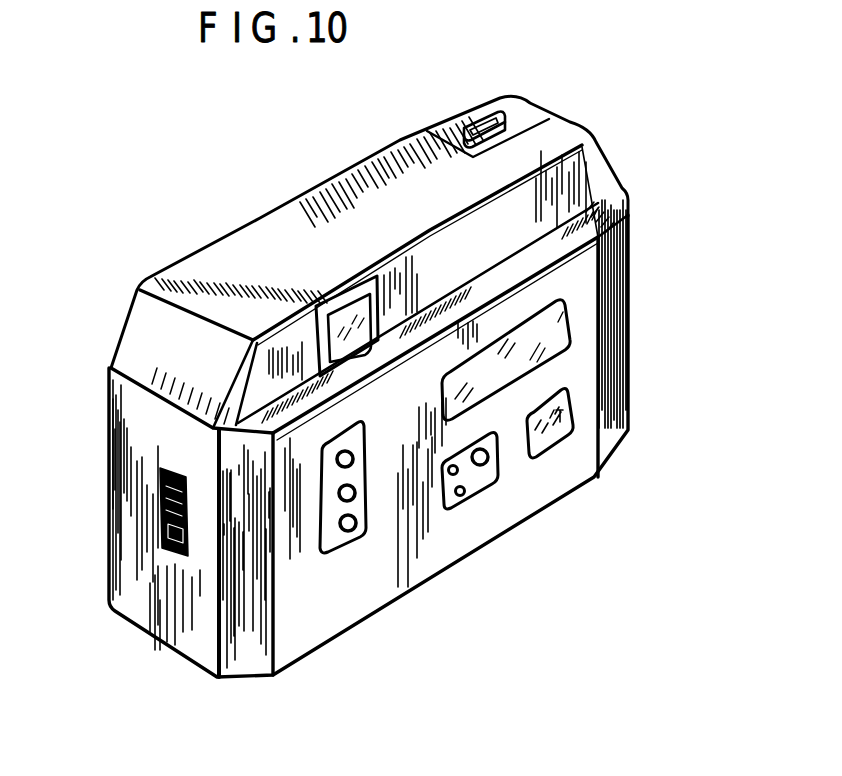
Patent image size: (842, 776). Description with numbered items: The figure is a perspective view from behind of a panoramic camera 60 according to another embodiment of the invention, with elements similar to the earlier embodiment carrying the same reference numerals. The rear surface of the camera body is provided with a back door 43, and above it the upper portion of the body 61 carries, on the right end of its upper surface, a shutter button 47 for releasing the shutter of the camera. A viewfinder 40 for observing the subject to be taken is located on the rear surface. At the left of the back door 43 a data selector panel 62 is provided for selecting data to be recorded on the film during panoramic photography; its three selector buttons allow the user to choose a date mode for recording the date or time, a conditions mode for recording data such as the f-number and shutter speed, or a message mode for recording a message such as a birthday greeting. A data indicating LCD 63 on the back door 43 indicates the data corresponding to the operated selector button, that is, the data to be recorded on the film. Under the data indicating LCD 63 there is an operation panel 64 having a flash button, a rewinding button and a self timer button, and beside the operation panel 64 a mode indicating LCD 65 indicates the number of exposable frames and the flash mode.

The panoramic camera 60 is at (263, 219).
The upper cover / lid 61 is at (613, 177).
The shutter button 47 is at (484, 114).
The viewfinder 40 is at (347, 290).
The data indicating LCD 63 is at (562, 333).
The operation panel 64 is at (481, 478).
The mode indicating LCD 65 is at (553, 438).
The data selector panel 62 is at (345, 542).
The back door 43 is at (247, 658).